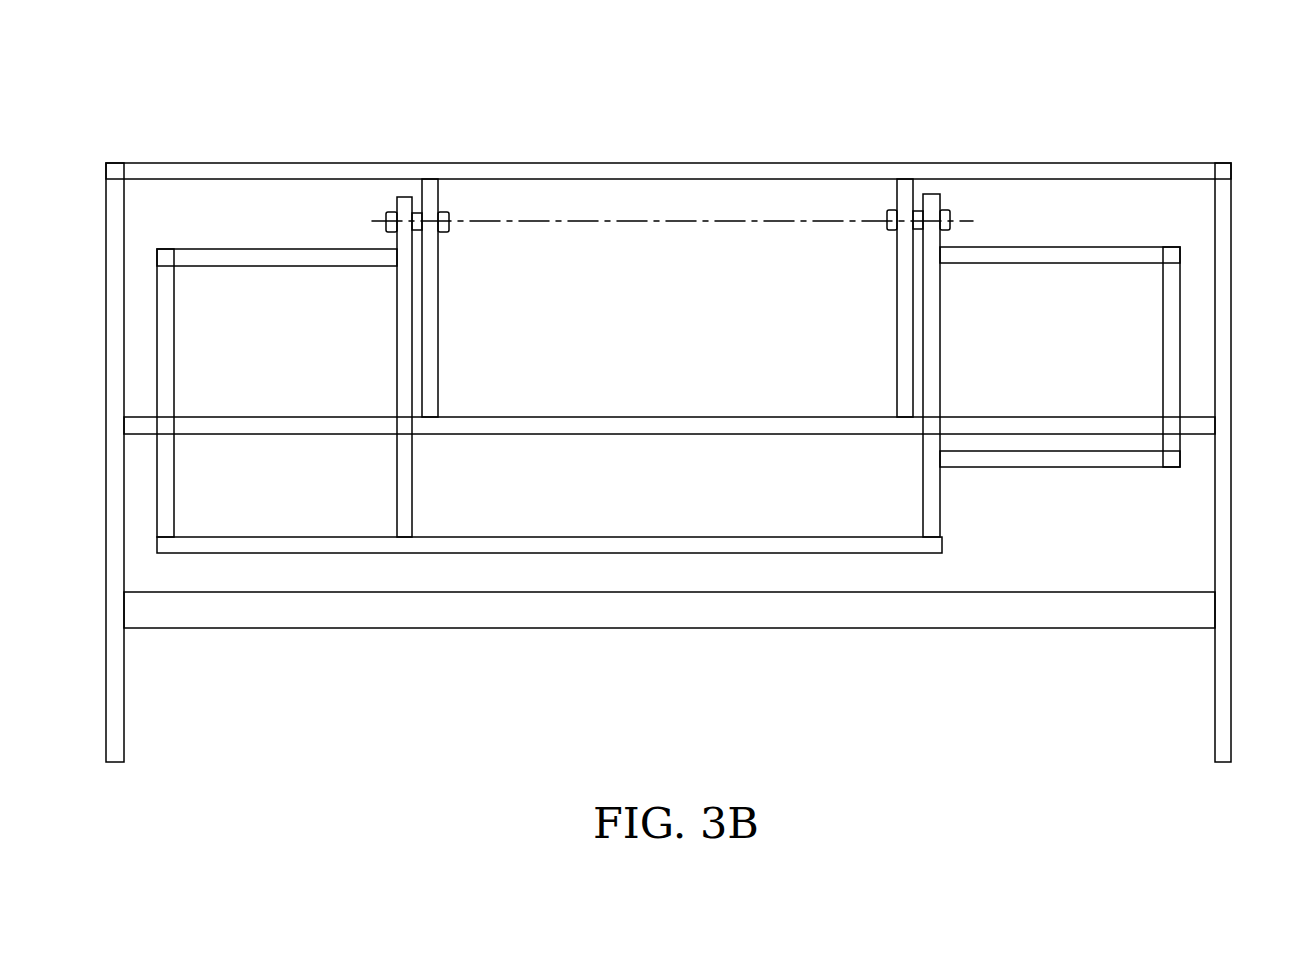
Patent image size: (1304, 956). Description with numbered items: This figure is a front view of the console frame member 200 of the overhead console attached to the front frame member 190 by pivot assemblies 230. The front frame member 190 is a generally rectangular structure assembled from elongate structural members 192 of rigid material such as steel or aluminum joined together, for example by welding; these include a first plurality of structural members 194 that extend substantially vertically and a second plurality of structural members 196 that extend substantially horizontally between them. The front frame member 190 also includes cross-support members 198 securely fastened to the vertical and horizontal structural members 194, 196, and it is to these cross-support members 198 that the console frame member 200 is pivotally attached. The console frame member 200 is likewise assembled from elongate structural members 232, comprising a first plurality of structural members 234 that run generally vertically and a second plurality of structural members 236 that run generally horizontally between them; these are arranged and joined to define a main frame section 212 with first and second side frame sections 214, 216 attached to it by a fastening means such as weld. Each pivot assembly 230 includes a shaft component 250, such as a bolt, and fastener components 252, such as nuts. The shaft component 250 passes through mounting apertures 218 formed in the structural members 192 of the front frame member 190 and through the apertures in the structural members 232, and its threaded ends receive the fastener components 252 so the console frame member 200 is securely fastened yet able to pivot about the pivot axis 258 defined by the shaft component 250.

The front frame member 190 is at (280, 170).
The elongate structural members 192 is at (656, 168).
The first plurality of structural members 194 is at (113, 520).
The second plurality of structural members 196 is at (571, 168).
The cross-support members 198 is at (432, 312).
The console frame member 200 is at (345, 258).
The main frame section 212 is at (712, 266).
The first side frame section 214 is at (1057, 300).
The second side frame section 216 is at (242, 326).
The mounting apertures 218 is at (440, 212).
The pivot assembly 230 is at (449, 222).
The elongate structural members 232 is at (165, 368).
The first plurality of structural members 234 is at (393, 398).
The second plurality of structural members 236 is at (302, 258).
The shaft component 250 is at (418, 232).
The fastener components 252 is at (387, 212).
The pivot axis 258 is at (545, 221).